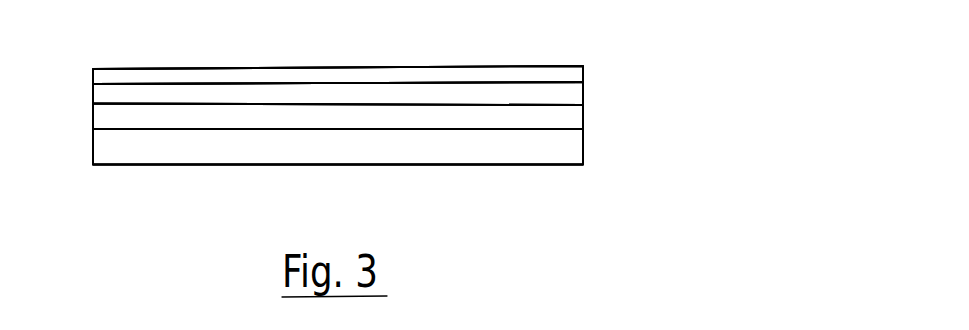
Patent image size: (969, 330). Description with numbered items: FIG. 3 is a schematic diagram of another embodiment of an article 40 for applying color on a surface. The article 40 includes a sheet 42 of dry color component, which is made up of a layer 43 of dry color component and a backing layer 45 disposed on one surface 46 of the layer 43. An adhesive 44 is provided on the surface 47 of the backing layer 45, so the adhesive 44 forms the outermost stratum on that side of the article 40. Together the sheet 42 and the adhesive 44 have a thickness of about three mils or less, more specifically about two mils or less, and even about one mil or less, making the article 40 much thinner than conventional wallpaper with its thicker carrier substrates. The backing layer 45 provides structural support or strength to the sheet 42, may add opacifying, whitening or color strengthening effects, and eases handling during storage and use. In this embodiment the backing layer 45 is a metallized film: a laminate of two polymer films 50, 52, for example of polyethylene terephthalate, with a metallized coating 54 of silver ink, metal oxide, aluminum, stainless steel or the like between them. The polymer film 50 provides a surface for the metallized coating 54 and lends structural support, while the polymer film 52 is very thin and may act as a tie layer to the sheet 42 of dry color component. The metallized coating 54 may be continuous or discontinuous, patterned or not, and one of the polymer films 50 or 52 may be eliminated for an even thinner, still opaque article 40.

The article 40 is at (698, 108).
The sheet of dry color component 42 is at (652, 82).
The layer of dry color component 43 is at (570, 149).
The adhesive 44 is at (570, 74).
The backing layer 45 is at (590, 83).
The surface of the layer of dry color component 46 is at (428, 129).
The surface of the backing layer 47 is at (492, 83).
The polymer film 50 is at (100, 90).
The polymer film 52 is at (100, 117).
The metallized coating 54 is at (163, 104).